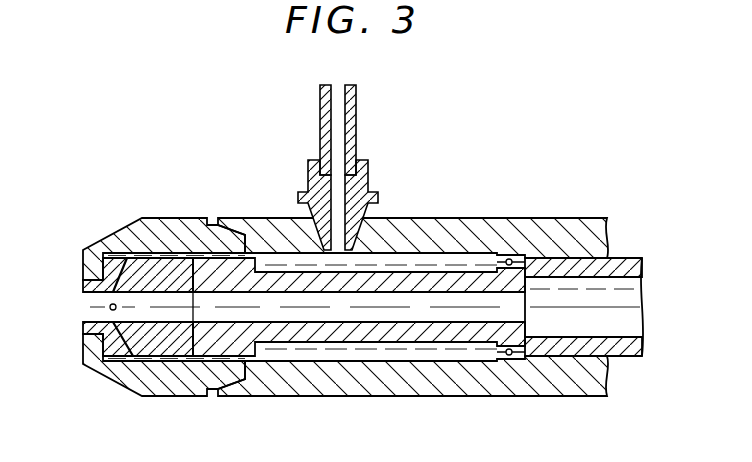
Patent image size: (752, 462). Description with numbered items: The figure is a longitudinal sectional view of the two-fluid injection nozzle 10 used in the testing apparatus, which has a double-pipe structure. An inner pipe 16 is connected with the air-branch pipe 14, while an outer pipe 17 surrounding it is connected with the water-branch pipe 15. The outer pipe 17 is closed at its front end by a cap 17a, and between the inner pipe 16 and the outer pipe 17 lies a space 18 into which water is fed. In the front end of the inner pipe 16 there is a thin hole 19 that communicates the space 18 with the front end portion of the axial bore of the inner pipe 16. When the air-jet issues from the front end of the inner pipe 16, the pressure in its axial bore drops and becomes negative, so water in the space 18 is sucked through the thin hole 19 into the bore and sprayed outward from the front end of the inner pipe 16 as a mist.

The nozzle 10 is at (340, 263).
The air-branch pipe 14 is at (618, 259).
The water-branch pipe 15 is at (356, 122).
The inner pipe 16 is at (458, 278).
The outer pipe 17 is at (419, 228).
The cap 17a is at (133, 220).
The space 18 is at (392, 357).
The thin hole 19 is at (125, 270).